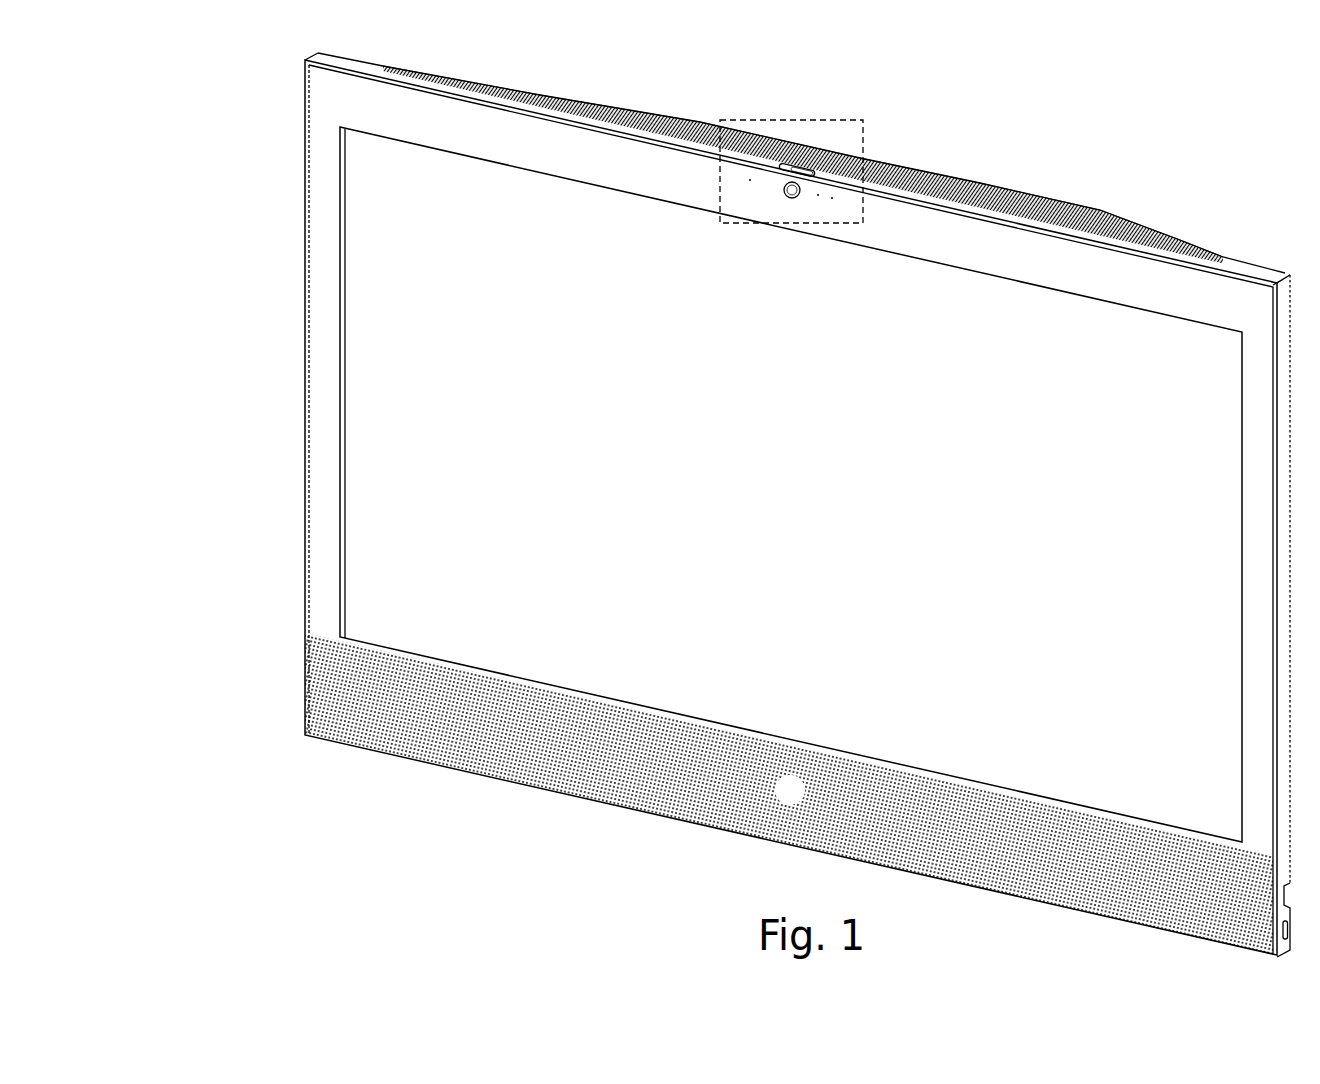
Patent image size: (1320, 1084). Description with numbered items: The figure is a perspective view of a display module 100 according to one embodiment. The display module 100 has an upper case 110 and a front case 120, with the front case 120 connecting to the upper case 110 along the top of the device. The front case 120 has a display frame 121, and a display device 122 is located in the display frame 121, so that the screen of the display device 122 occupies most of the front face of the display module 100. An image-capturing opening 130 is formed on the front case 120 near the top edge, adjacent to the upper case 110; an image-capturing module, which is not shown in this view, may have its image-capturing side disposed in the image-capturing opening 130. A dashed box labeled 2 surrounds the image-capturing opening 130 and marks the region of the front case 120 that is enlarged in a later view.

The display module 100 is at (158, 872).
The upper case 110 is at (318, 53).
The front case 120 is at (310, 216).
The display frame 121 is at (343, 287).
The display device 122 is at (405, 373).
The image-capturing opening 130 is at (790, 197).
The enlarged region of FIG. 2 is at (863, 120).